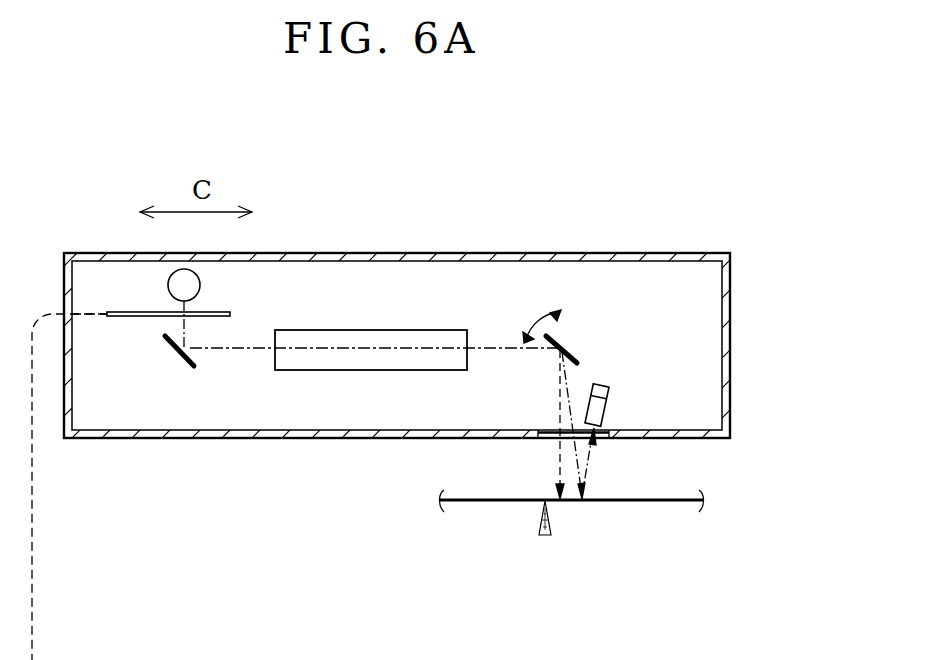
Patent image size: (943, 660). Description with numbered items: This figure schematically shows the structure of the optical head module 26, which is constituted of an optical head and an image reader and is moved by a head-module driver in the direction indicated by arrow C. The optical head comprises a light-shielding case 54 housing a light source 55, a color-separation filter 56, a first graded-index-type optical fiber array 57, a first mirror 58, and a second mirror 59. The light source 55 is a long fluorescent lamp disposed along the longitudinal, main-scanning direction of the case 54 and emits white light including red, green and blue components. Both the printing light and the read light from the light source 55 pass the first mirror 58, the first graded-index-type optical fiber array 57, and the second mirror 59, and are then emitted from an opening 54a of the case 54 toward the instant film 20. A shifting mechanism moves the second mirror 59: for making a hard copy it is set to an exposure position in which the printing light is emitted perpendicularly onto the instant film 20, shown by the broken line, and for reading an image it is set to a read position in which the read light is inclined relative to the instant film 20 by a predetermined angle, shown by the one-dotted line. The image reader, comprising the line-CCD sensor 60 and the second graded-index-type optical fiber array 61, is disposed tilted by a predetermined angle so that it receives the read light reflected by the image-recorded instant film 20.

The instant film 20 is at (548, 535).
The optical head module 26 is at (403, 245).
The light-shielding case 54 is at (636, 253).
The opening 54a is at (550, 438).
The light source 55 is at (200, 285).
The color-separation filter 56 is at (128, 318).
The first graded-index-type optical fiber array 57 is at (378, 330).
The first mirror 58 is at (188, 364).
The second mirror 59 is at (572, 347).
The line-CCD sensor 60 is at (607, 394).
The second graded-index-type optical fiber array 61 is at (607, 412).